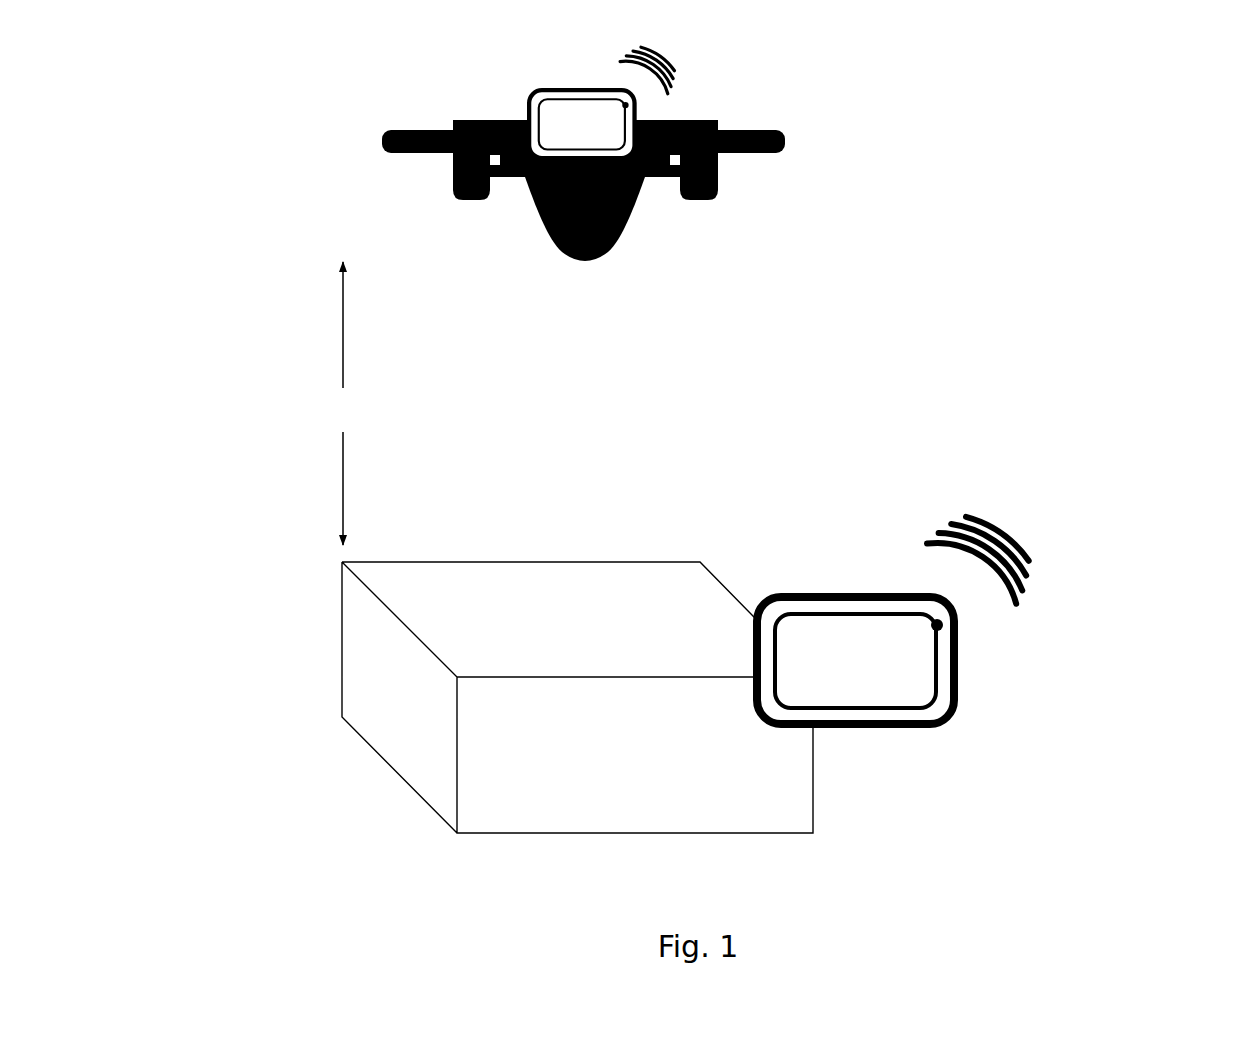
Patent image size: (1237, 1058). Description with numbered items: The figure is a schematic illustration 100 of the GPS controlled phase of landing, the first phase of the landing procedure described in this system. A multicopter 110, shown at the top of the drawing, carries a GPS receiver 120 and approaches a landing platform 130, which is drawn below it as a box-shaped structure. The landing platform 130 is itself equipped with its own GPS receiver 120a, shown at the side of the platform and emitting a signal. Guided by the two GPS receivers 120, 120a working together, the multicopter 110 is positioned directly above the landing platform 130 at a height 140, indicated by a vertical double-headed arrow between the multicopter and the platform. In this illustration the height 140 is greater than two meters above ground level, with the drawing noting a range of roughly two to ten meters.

The GPS controlled phase of landing 100 is at (1196, 118).
The multicopter 110 is at (437, 128).
The GPS receiver 120 is at (637, 112).
The GPS receiver 120a is at (958, 670).
The landing platform 130 is at (553, 623).
The height 140 is at (342, 347).